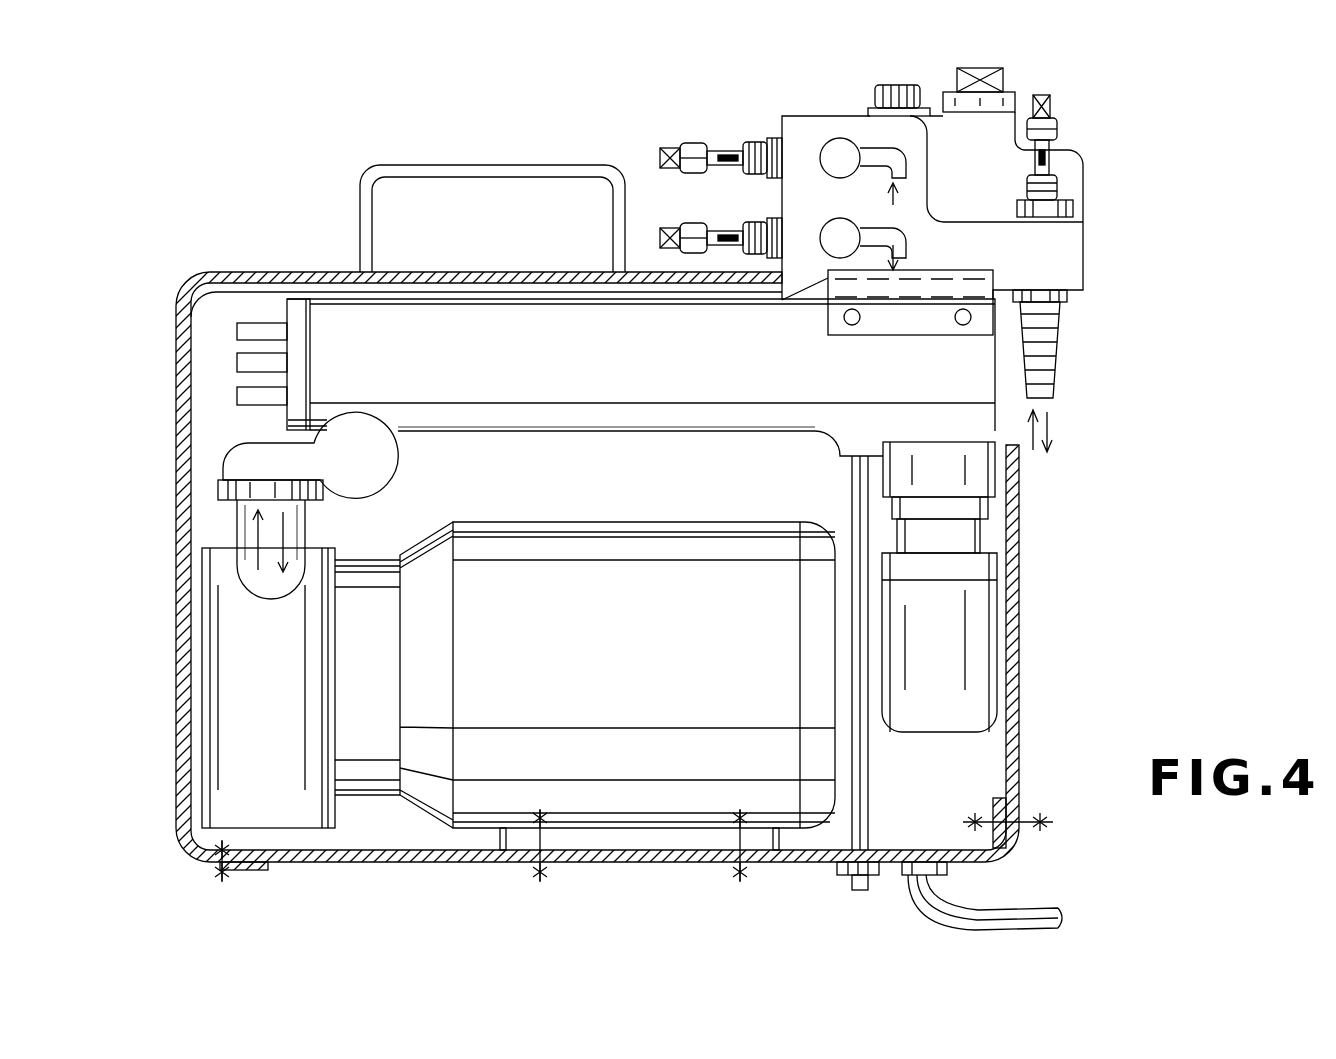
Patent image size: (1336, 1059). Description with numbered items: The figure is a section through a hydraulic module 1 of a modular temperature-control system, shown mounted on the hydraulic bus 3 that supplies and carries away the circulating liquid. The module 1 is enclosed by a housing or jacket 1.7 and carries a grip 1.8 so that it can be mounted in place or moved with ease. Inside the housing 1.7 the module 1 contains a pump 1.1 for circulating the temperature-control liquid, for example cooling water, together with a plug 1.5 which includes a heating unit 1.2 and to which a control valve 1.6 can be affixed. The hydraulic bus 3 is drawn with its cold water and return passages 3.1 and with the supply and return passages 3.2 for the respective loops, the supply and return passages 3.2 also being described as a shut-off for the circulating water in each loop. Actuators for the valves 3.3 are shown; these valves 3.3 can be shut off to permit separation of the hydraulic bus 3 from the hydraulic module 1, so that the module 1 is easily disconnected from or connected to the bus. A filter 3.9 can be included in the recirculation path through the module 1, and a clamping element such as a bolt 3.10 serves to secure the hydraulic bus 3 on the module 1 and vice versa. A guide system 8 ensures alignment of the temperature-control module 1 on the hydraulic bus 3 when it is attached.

The hydraulic module 1 is at (633, 483).
The pump 1.1 is at (660, 768).
The heater 1.2 is at (298, 320).
The plug 1.5 is at (433, 357).
The control valve 1.6 is at (950, 645).
The housing 1.7 is at (204, 272).
The grip 1.8 is at (372, 180).
The hydraulic bus 3 is at (1055, 252).
The cold water and return passages 3.1 is at (840, 222).
The supply and return passages 3.2 is at (1037, 366).
The valves 3.3 is at (670, 228).
The filter 3.9 is at (1015, 93).
The bolt 3.10 is at (903, 85).
The guide system 8 is at (978, 282).